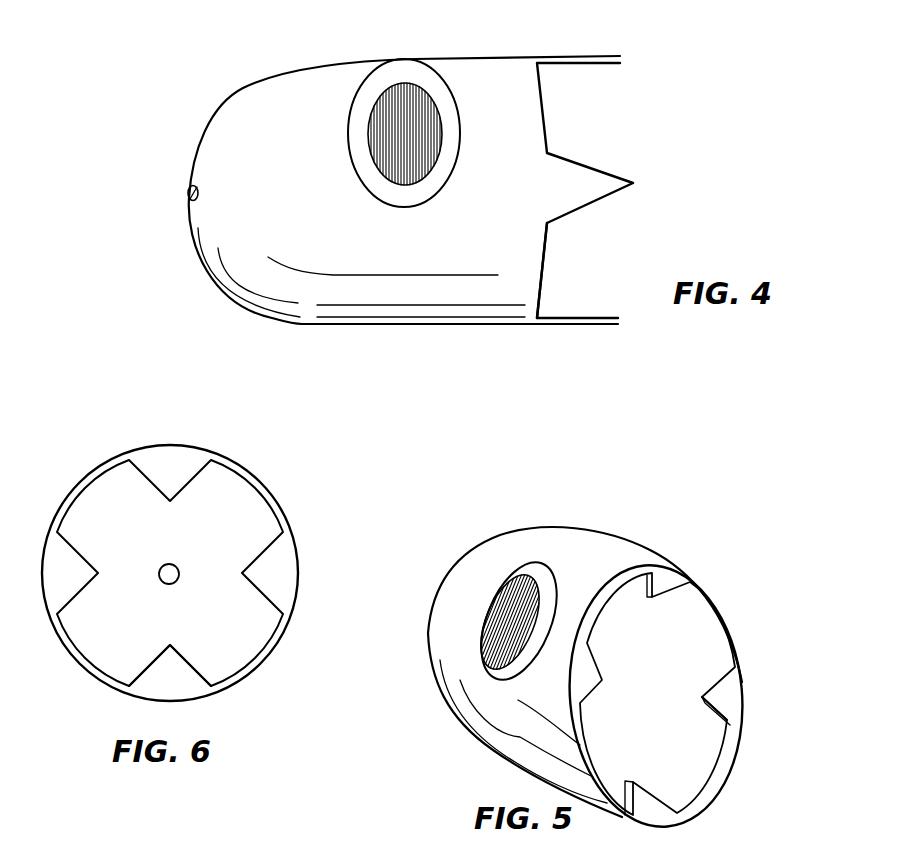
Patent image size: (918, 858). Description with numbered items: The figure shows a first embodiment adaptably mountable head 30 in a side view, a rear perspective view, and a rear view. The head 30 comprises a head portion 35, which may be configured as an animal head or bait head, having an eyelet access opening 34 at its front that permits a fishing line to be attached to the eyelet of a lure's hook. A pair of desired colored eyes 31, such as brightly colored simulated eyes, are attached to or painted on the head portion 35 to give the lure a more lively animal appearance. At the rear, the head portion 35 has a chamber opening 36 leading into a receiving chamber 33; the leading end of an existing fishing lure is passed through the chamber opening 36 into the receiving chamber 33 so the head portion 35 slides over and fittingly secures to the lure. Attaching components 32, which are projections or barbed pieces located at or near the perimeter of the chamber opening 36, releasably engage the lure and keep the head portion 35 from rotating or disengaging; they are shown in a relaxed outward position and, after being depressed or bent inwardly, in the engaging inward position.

In FIG. 4, the adaptably mountable head 30 is at (235, 78).
In FIG. 6, the adaptably mountable head 30 is at (127, 442).
In FIG. 5, the adaptably mountable head 30 is at (637, 513).
In FIG. 4, the colored eyes 31 is at (418, 100).
In FIG. 5, the colored eyes 31 is at (525, 577).
In FIG. 4, the attaching components 32 is at (576, 183).
In FIG. 6, the attaching components 32 is at (283, 570).
In FIG. 5, the attaching components 32 is at (723, 693).
In FIG. 6, the receiving chamber 33 is at (211, 531).
In FIG. 5, the receiving chamber 33 is at (651, 653).
In FIG. 4, the eyelet access opening 34 is at (190, 190).
In FIG. 6, the eyelet access opening 34 is at (174, 583).
In FIG. 4, the head portion 35 is at (334, 80).
In FIG. 5, the head portion 35 is at (513, 702).
In FIG. 4, the chamber opening 36 is at (550, 273).
In FIG. 6, the chamber opening 36 is at (234, 647).
In FIG. 5, the chamber opening 36 is at (691, 755).